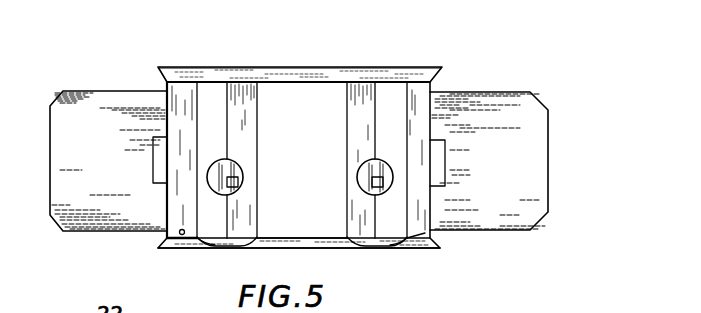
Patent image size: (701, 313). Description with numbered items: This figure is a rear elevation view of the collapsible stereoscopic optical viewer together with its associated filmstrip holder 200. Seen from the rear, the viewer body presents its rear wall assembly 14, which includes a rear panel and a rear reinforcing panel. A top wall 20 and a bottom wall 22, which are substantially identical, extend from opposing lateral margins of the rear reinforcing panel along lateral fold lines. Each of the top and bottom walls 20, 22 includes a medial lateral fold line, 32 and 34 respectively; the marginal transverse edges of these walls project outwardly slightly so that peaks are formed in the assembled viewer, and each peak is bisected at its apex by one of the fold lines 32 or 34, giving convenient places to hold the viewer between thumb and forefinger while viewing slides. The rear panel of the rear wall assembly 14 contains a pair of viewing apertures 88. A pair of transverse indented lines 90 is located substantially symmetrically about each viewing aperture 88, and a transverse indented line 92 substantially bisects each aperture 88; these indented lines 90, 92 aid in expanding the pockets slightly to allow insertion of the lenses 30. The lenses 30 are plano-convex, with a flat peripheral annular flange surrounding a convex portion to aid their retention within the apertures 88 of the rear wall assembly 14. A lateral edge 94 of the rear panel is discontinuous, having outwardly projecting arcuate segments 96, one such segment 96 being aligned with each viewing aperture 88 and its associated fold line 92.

The rear wall assembly 14 is at (297, 224).
The top wall 20 is at (347, 80).
The bottom wall 22 is at (289, 246).
The lenses 30 is at (367, 178).
The medial lateral fold line 32 is at (285, 67).
The medial lateral fold line 34 is at (342, 249).
The viewing apertures 88 is at (361, 164).
The transverse indented lines 90 is at (405, 98).
The transverse indented line 92 is at (223, 90).
The lateral edge 94 is at (182, 235).
The arcuate segments 96 is at (218, 245).
The filmstrip holder 200 is at (548, 160).